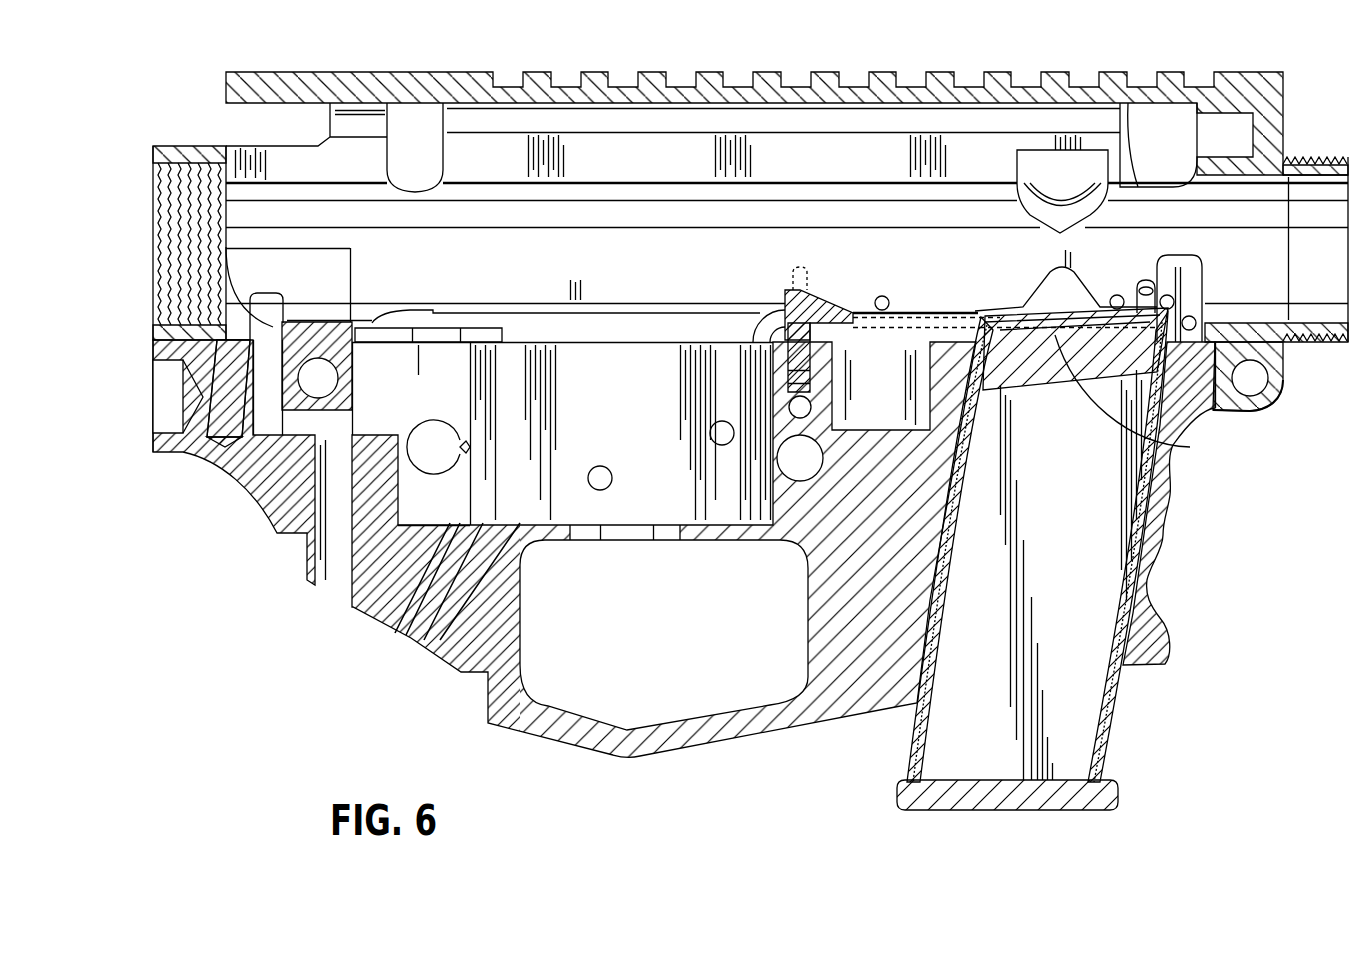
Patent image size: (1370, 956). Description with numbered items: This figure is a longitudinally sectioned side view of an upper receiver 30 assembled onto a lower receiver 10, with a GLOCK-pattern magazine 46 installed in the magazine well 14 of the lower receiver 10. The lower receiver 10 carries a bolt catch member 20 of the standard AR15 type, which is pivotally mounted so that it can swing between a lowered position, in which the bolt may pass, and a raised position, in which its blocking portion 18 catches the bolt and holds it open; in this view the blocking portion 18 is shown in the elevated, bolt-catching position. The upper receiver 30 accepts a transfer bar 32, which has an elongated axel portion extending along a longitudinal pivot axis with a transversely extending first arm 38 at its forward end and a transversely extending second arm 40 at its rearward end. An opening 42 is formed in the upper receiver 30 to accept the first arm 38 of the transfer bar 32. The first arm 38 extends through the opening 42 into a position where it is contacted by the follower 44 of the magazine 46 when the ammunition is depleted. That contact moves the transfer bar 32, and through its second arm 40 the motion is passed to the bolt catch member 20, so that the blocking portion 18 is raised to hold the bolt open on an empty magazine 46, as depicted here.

The lower receiver 10 is at (690, 758).
The magazine well 14 is at (1044, 559).
The blocking portion 18 is at (812, 322).
The bolt catch member 20 is at (776, 294).
The upper receiver 30 is at (771, 66).
The transfer bar 32 is at (952, 312).
The first arm 38 is at (1139, 284).
The second arm 40 is at (794, 266).
The opening 42 is at (1156, 278).
The follower 44 is at (1190, 447).
The GLOCK-pattern magazine 46 is at (1113, 725).